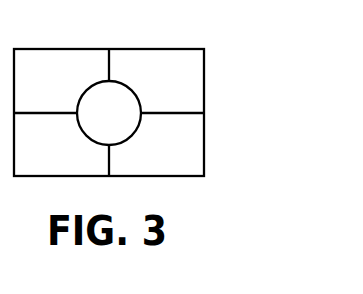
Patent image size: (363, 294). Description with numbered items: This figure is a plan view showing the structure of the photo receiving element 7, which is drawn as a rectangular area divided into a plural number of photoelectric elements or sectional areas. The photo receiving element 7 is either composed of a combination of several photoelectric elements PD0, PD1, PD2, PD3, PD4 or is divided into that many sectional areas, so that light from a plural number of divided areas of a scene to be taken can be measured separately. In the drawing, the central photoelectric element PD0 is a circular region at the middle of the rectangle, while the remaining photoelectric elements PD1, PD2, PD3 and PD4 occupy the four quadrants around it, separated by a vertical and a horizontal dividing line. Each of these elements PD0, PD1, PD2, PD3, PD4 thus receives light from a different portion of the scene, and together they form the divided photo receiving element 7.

The photo receiving element 7 is at (146, 44).
The photoelectric element PD0 is at (106, 115).
The photoelectric element PD1 is at (61, 81).
The photoelectric element PD2 is at (61, 144).
The photoelectric element PD3 is at (156, 144).
The photoelectric element PD4 is at (156, 81).